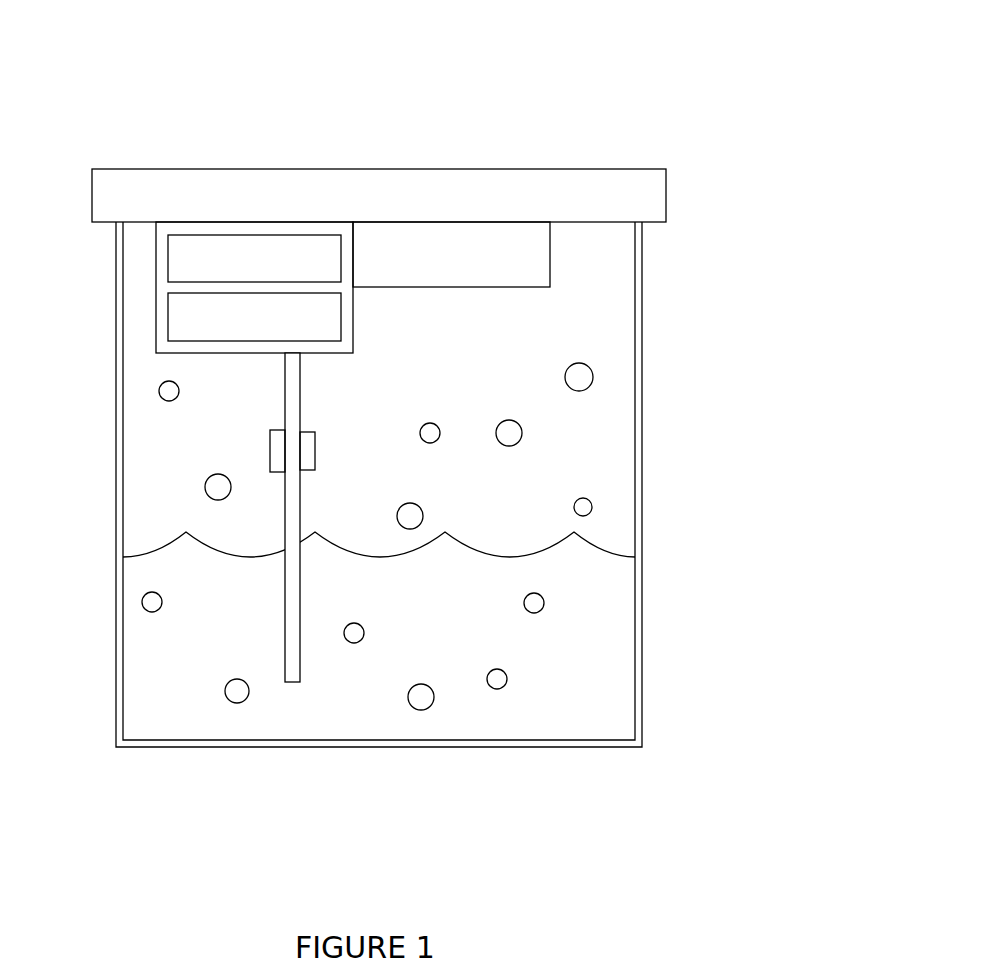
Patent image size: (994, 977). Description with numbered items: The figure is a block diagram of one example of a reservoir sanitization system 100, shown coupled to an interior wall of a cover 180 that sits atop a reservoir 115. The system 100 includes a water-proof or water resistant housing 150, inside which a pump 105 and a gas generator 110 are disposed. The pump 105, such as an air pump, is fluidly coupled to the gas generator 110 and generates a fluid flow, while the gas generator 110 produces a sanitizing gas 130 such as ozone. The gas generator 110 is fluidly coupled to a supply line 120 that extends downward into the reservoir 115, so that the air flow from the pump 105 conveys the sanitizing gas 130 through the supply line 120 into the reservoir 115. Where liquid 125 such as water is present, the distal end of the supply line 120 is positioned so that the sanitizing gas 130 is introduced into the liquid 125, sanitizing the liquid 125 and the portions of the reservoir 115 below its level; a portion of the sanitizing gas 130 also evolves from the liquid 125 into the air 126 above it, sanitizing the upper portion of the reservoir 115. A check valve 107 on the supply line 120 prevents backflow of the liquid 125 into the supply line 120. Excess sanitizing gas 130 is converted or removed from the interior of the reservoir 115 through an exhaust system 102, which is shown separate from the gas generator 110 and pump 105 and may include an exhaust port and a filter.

The reservoir sanitization system 100 is at (520, 148).
The cover 180 is at (248, 168).
The reservoir 115 is at (642, 643).
The liquid 125 is at (173, 689).
The air 126 is at (532, 334).
The housing 150 is at (156, 297).
The pump 105 is at (168, 258).
The gas generator 110 is at (168, 325).
The exhaust system 102 is at (550, 255).
The supply line 120 is at (285, 517).
The check valve 107 is at (268, 452).
The sanitizing gas 130 is at (593, 372).